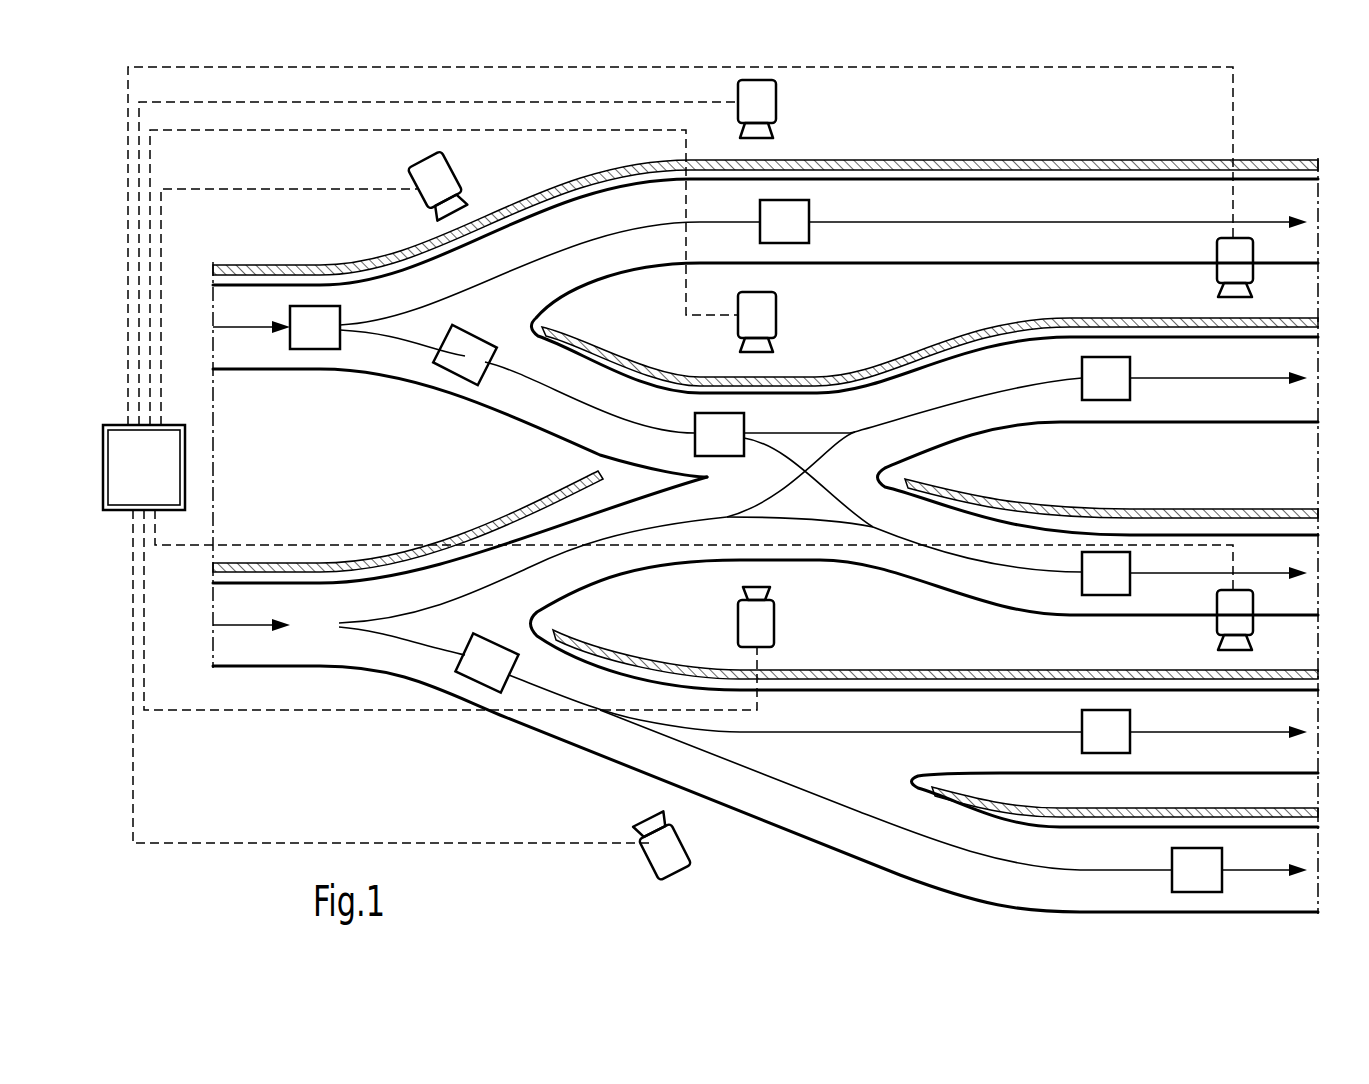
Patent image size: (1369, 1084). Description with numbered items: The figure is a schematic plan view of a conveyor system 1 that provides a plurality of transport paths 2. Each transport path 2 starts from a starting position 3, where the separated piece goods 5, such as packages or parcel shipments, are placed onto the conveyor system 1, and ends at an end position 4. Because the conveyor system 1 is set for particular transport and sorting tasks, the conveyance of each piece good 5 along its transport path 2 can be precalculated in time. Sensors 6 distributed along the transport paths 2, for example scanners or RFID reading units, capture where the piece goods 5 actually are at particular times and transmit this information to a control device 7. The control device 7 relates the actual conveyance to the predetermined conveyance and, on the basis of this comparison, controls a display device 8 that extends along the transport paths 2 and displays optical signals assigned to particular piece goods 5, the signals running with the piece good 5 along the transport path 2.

The conveyor system 1 is at (79, 117).
The transport path 2 is at (1066, 222).
The starting position 3 is at (237, 332).
The end position 4 is at (1272, 222).
The piece good 5 is at (308, 341).
The sensor 6 is at (778, 103).
The control device 7 is at (137, 481).
The display device 8 is at (966, 162).